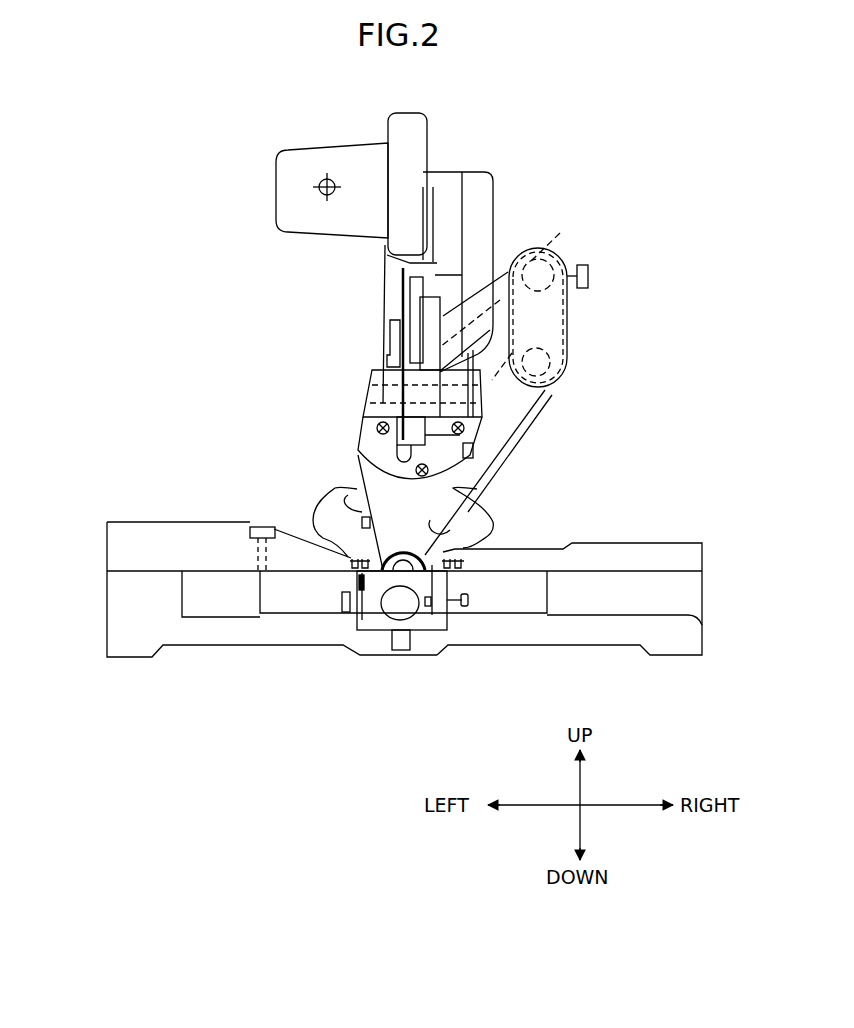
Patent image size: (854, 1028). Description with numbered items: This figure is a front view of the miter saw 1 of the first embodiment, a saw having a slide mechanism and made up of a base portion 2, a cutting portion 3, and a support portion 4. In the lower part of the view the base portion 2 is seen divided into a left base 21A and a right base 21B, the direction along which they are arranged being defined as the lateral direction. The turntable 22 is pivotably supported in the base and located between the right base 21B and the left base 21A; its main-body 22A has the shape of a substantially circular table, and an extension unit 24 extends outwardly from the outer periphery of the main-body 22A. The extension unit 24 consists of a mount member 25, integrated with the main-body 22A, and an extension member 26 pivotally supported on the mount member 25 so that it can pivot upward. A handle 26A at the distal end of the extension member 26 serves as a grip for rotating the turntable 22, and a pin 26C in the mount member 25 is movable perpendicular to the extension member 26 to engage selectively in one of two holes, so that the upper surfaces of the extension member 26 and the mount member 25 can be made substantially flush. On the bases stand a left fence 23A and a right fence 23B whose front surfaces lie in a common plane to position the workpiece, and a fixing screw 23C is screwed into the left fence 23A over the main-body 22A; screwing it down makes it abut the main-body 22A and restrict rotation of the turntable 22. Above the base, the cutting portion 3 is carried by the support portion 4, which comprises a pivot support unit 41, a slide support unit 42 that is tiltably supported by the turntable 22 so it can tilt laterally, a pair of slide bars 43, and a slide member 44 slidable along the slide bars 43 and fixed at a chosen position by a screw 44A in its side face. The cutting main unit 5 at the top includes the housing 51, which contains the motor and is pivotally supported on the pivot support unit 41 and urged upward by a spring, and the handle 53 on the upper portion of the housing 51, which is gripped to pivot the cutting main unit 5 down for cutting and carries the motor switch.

The miter saw 1 is at (612, 212).
The base portion 2 is at (617, 668).
The cutting portion 3 is at (337, 317).
The support portion 4 is at (567, 320).
The cutting main unit 5 is at (494, 193).
The left base 21A is at (107, 608).
The right base 21B is at (685, 594).
The turntable 22 is at (518, 603).
The main-body 22A is at (300, 600).
The left fence 23A is at (107, 548).
The right fence 23B is at (688, 553).
The fixing screw 23C is at (265, 527).
The extension unit 24 is at (432, 607).
The mount member 25 is at (343, 612).
The extension member 26 is at (445, 633).
The handle 26A is at (397, 615).
The pin 26C is at (468, 600).
The pivot support unit 41 is at (367, 408).
The slide support unit 42 is at (440, 495).
The slide bars 43 is at (507, 292).
The slide member 44 is at (568, 332).
The screw 44A is at (589, 277).
The housing 51 is at (443, 180).
The handle 53 is at (413, 117).